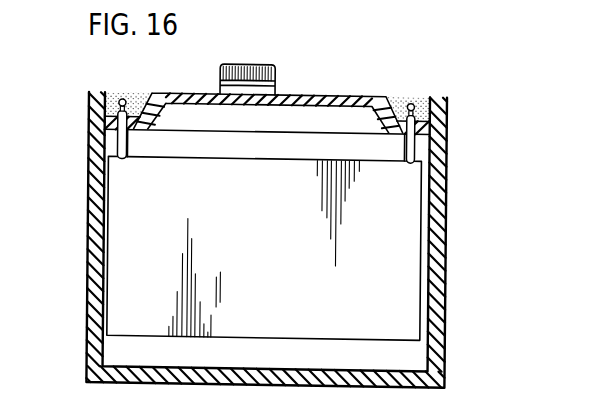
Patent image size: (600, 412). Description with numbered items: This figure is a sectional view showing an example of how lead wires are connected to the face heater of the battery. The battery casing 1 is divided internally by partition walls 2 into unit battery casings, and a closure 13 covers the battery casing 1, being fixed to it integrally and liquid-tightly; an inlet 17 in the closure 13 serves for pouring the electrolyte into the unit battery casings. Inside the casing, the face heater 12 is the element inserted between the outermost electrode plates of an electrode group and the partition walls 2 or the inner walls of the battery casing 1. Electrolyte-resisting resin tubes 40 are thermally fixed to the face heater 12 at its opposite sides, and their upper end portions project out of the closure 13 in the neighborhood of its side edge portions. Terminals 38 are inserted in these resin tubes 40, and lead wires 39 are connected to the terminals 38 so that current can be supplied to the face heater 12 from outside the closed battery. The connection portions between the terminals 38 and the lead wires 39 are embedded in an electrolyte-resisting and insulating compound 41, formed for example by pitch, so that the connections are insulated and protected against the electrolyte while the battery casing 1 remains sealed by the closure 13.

The battery casing 1 is at (446, 201).
The partition walls 2 is at (337, 139).
The face heater 12 is at (119, 202).
The closure 13 is at (305, 86).
The inlet 17 is at (220, 68).
The terminals 38 is at (433, 110).
The lead wires 39 is at (414, 101).
The electrolyte-resisting resin tubes 40 is at (120, 140).
The electrolyte-resisting and insulating compound 41 is at (395, 97).